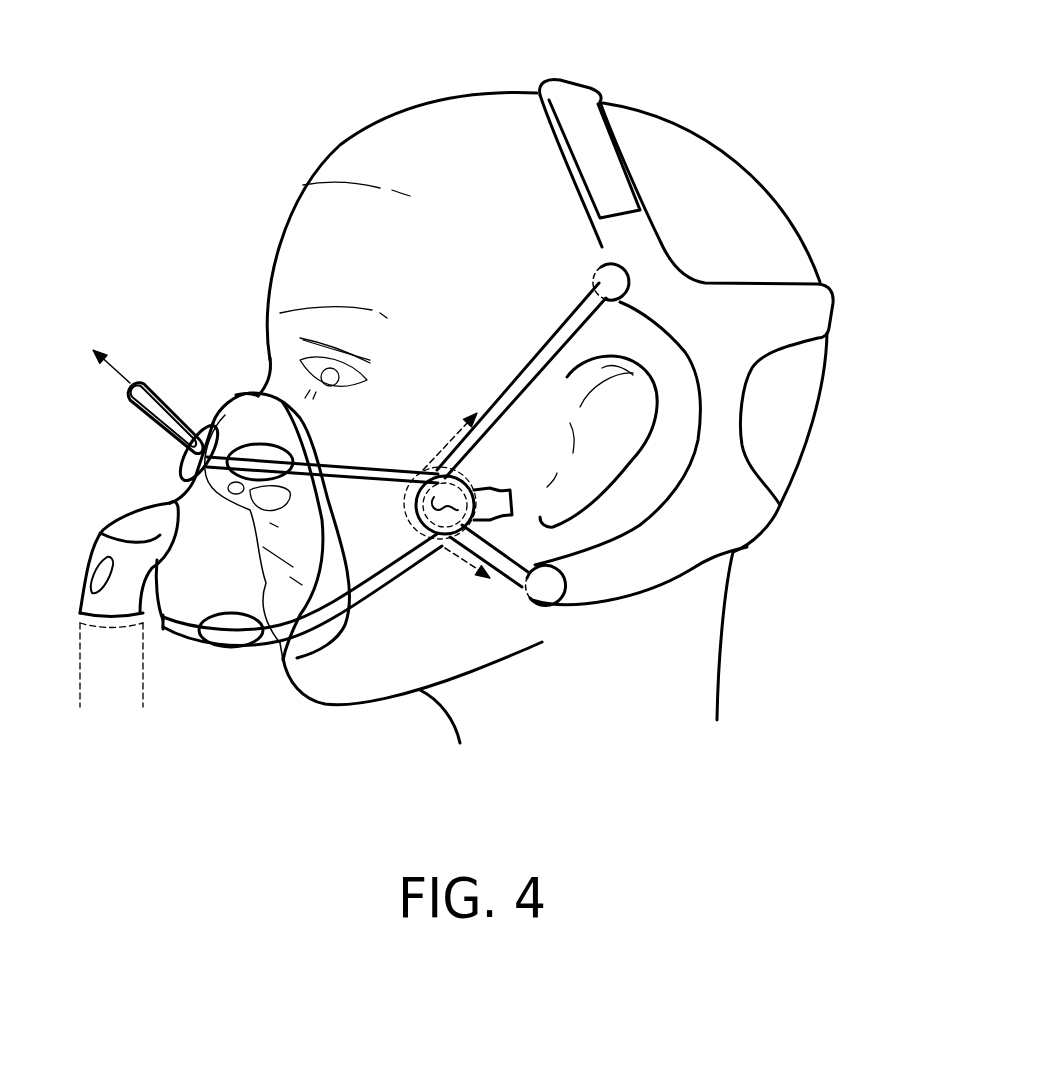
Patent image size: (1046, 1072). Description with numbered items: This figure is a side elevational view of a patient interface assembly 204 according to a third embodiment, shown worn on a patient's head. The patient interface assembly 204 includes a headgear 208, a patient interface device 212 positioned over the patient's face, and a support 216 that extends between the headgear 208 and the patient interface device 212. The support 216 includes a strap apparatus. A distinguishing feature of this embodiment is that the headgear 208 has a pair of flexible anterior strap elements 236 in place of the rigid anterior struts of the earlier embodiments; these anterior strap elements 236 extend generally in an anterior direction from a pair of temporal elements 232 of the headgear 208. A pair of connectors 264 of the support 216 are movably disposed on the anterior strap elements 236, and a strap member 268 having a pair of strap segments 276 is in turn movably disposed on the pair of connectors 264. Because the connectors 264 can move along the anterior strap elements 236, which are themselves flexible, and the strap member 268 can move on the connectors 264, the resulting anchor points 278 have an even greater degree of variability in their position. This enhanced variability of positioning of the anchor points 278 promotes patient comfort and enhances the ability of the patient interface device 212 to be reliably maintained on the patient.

The patient interface assembly 204 is at (203, 113).
The headgear 208 is at (582, 78).
The patient interface device 212 is at (188, 501).
The support 216 is at (362, 462).
The temporal elements 232 is at (660, 596).
The anterior strap elements 236 is at (543, 350).
The connectors 264 is at (452, 490).
The strap member 268 is at (411, 573).
The strap segments 276 is at (377, 592).
The anchor points 278 is at (462, 528).